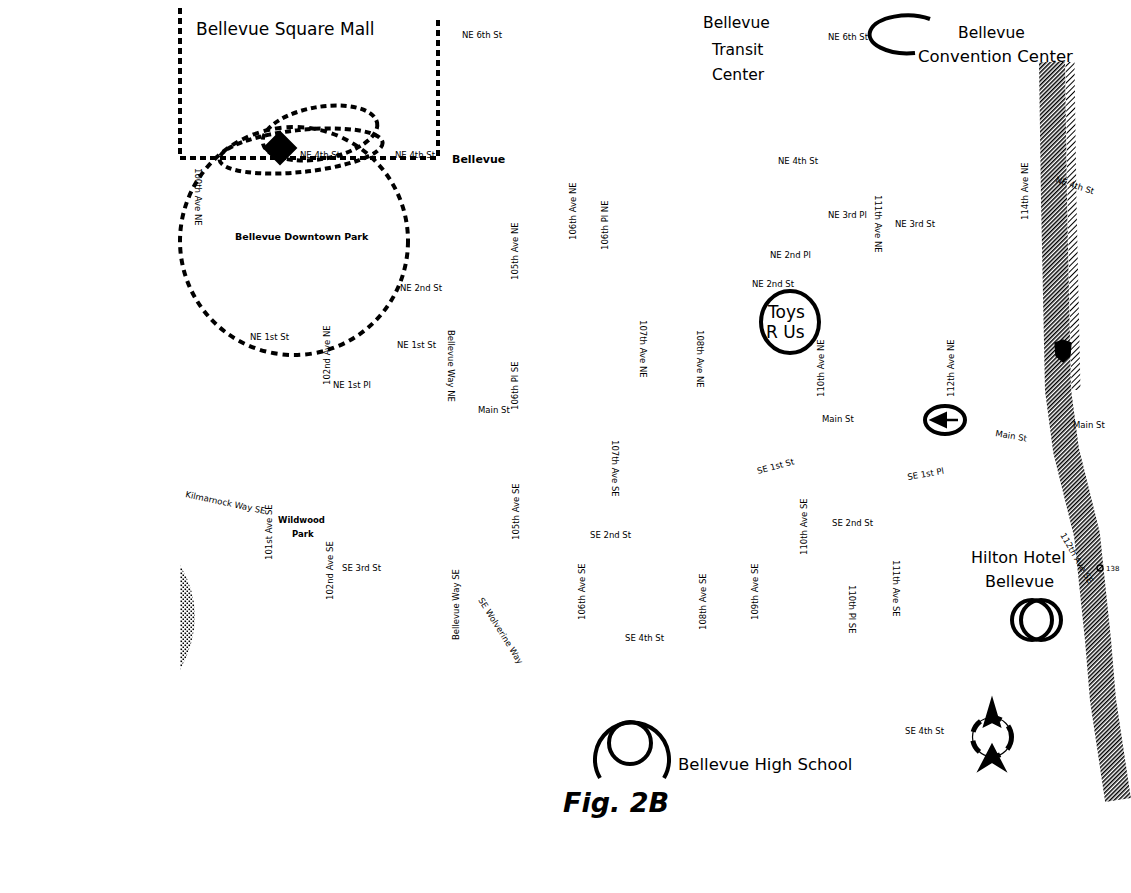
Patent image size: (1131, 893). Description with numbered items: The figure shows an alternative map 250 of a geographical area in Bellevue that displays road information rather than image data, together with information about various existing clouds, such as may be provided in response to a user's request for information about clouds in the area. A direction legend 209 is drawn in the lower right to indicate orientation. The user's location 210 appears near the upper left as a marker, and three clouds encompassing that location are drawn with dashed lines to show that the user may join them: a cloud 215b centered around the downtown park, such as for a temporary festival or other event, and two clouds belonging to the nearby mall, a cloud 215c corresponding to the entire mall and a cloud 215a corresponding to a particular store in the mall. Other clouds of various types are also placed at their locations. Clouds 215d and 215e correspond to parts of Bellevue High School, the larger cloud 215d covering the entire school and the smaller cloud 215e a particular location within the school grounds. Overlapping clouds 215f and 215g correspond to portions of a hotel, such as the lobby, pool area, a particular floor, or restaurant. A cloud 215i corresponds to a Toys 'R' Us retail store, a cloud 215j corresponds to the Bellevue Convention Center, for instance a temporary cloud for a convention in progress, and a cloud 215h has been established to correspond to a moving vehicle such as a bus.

The direction legend 209 is at (1014, 732).
The location 210 is at (270, 152).
The cloud 215a is at (283, 112).
The cloud 215b is at (210, 333).
The cloud 215c is at (180, 42).
The cloud 215d is at (597, 763).
The cloud 215e is at (608, 752).
The cloud 215f is at (1012, 620).
The cloud 215g is at (1022, 633).
The cloud 215h is at (935, 435).
The cloud 215i is at (767, 345).
The cloud 215j is at (890, 52).
The map 250 is at (178, 683).